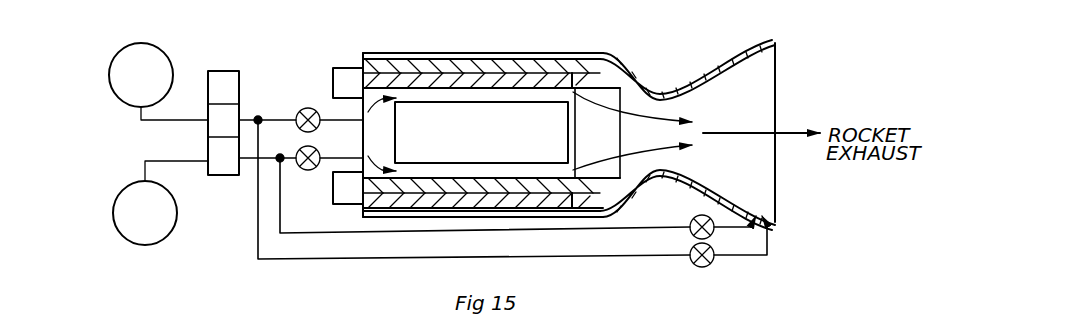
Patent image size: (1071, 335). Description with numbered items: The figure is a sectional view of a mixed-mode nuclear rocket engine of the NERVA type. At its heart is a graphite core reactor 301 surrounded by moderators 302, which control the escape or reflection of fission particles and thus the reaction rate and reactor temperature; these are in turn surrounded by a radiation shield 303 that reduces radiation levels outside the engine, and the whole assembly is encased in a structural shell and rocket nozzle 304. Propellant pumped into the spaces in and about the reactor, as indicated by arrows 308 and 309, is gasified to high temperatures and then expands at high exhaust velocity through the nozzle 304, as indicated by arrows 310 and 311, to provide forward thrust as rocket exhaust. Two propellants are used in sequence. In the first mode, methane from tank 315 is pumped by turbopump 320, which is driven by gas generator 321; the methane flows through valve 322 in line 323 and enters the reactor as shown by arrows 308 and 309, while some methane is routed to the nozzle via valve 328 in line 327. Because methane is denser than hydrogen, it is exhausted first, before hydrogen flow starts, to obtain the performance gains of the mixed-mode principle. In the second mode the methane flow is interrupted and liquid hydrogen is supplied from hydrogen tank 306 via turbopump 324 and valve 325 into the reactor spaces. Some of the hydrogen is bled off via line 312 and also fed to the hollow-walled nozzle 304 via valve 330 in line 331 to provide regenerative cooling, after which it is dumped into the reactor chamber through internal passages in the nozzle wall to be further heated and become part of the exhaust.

The graphite core reactor 301 is at (558, 112).
The moderators 302 is at (483, 80).
The radiation shield 303 is at (455, 28).
The structural shell and rocket nozzle 304 is at (582, 53).
The hydrogen tank 306 is at (156, 240).
The arrow 308 is at (380, 115).
The arrow 309 is at (390, 158).
The arrow 310 is at (676, 116).
The arrow 311 is at (655, 148).
The line 312 is at (464, 238).
The tank 315 is at (150, 22).
The turbopump 320 is at (240, 112).
The gas generator 321 is at (228, 70).
The valve 322 is at (308, 108).
The line 323 is at (207, 128).
The turbopump 324 is at (220, 176).
The valve 325 is at (306, 170).
The line 327 is at (350, 233).
The valve 328 is at (690, 240).
The valve 330 is at (700, 268).
The line 331 is at (602, 258).